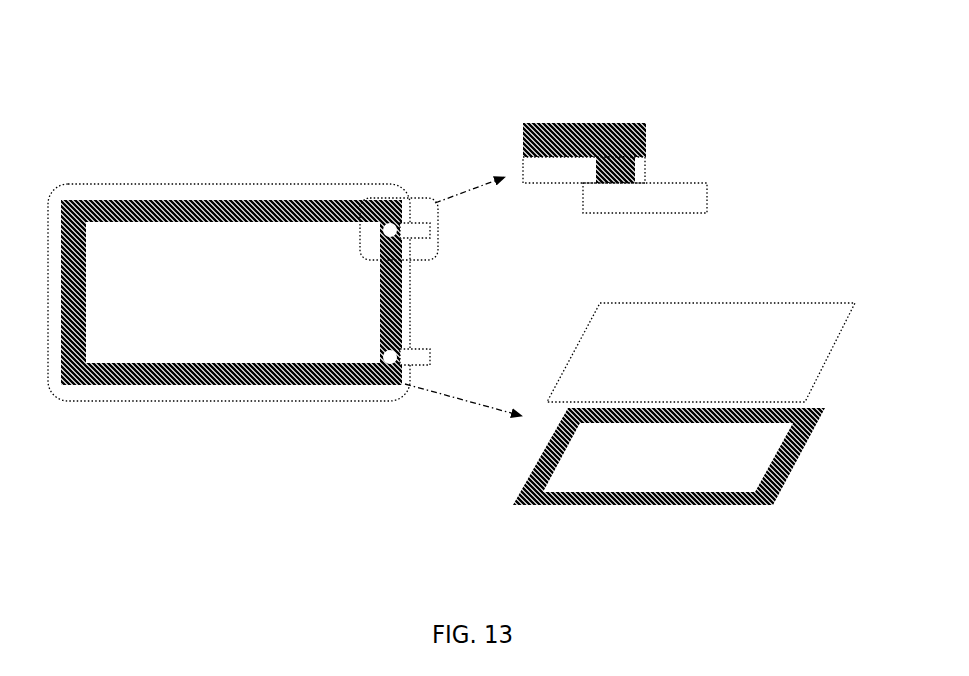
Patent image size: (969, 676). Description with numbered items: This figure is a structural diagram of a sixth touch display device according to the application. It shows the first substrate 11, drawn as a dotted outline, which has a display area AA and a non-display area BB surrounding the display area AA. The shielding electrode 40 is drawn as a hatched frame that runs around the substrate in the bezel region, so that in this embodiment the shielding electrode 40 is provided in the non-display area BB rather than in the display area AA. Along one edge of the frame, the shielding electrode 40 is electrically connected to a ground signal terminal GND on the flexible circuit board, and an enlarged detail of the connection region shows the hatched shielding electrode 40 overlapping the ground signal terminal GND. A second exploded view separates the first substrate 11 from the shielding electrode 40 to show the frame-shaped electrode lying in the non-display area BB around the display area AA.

The first substrate 11 is at (205, 330).
The shielding electrode 40 is at (230, 200).
The ground signal terminal GND is at (553, 263).
The display area AA is at (668, 457).
The non-display area BB is at (652, 505).